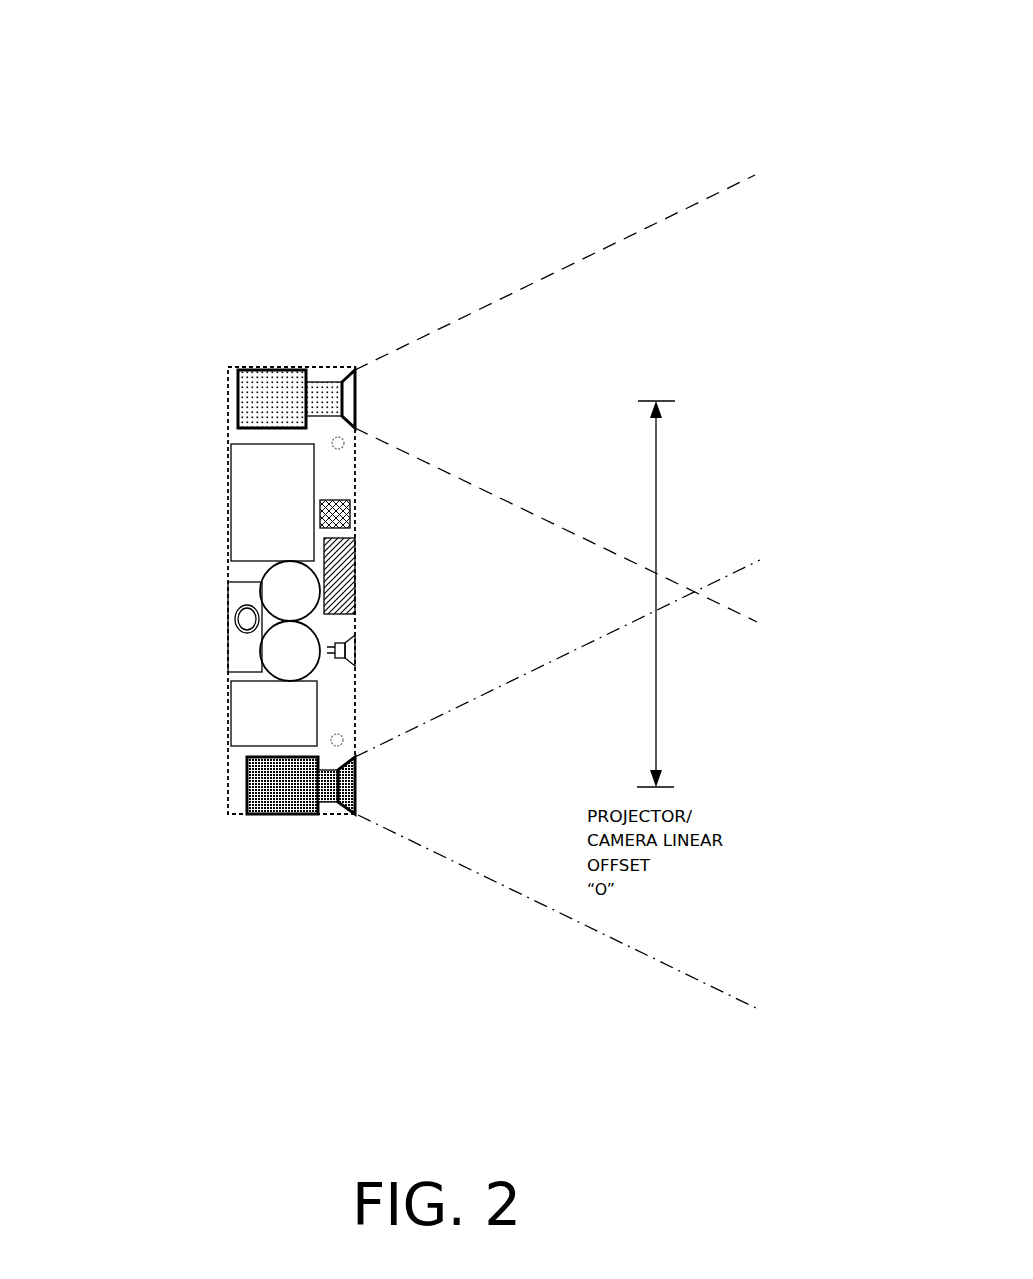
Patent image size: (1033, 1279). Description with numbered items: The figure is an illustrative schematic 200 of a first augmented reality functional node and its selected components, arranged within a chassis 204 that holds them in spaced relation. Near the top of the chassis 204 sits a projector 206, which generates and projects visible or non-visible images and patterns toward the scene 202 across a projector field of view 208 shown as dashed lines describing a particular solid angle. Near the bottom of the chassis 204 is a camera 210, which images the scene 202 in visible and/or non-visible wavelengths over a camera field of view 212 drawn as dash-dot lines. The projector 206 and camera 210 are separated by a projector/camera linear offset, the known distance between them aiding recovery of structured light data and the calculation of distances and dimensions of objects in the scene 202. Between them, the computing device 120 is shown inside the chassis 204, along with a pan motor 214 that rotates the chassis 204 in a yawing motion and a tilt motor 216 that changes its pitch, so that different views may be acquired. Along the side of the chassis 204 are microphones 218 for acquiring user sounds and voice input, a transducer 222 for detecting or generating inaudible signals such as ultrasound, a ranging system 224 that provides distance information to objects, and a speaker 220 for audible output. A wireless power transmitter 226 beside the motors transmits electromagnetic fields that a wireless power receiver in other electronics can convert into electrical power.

The illustrative schematic 200 is at (718, 42).
The chassis 204 is at (293, 367).
The projector 206 is at (272, 397).
The projector field of view 208 is at (557, 268).
The computing device 120 is at (272, 500).
The microphones 218 is at (345, 440).
The transducer 222 is at (352, 500).
The ranging system 224 is at (352, 562).
The pan motor 214 is at (268, 575).
The tilt motor 216 is at (264, 654).
The wireless power transmitter 226 is at (235, 619).
The speaker 220 is at (357, 650).
The camera 210 is at (255, 802).
The camera field of view 212 is at (510, 893).
The scene 202 is at (762, 590).